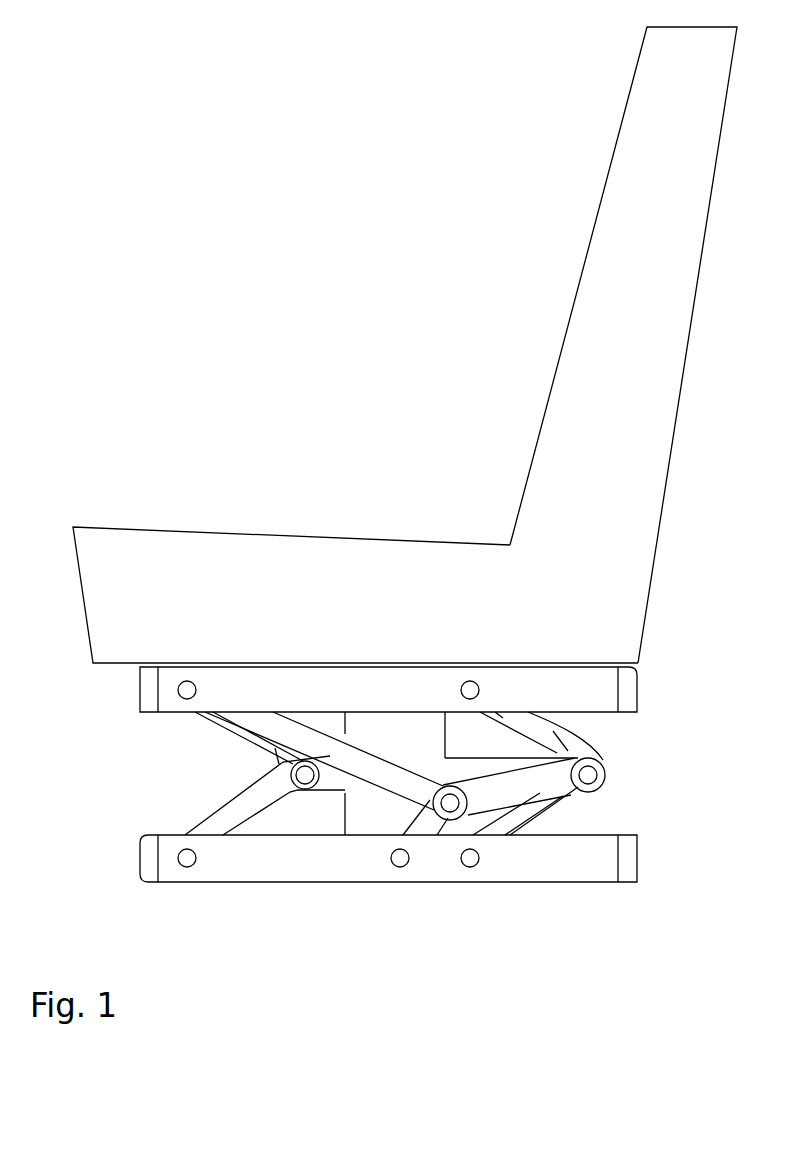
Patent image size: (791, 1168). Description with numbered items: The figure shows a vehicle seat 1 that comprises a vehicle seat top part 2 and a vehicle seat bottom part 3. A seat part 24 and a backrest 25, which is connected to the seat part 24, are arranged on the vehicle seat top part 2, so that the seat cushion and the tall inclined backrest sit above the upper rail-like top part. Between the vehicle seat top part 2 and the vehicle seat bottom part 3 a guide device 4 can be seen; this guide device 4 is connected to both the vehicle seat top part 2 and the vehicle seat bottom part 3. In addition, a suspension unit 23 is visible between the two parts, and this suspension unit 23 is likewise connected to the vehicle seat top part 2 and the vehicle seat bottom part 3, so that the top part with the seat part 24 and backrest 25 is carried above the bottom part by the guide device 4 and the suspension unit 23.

The vehicle seat 1 is at (405, 454).
The vehicle seat top part 2 is at (627, 690).
The vehicle seat bottom part 3 is at (627, 858).
The guide device 4 is at (450, 725).
The suspension unit 23 is at (397, 728).
The seat part 24 is at (222, 548).
The backrest 25 is at (627, 165).